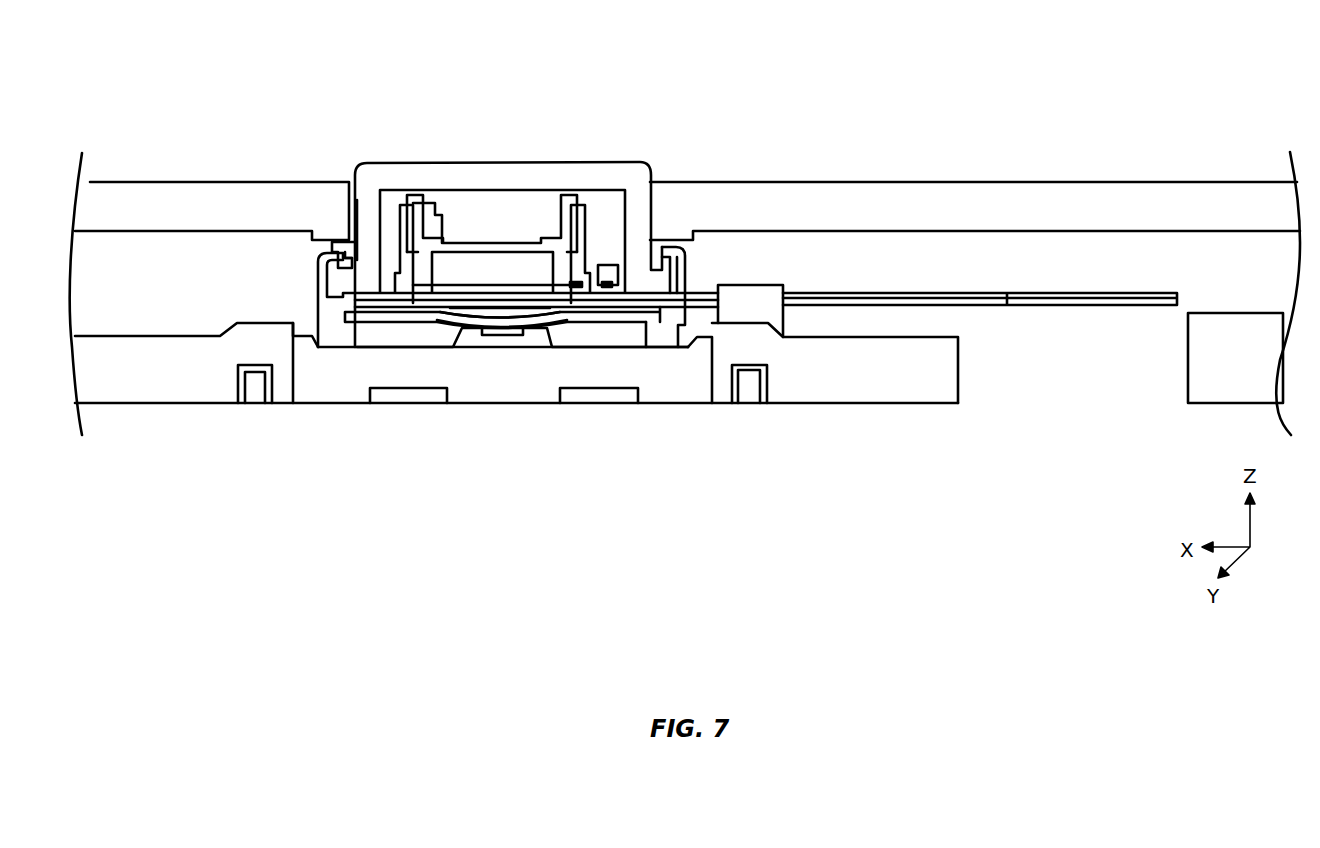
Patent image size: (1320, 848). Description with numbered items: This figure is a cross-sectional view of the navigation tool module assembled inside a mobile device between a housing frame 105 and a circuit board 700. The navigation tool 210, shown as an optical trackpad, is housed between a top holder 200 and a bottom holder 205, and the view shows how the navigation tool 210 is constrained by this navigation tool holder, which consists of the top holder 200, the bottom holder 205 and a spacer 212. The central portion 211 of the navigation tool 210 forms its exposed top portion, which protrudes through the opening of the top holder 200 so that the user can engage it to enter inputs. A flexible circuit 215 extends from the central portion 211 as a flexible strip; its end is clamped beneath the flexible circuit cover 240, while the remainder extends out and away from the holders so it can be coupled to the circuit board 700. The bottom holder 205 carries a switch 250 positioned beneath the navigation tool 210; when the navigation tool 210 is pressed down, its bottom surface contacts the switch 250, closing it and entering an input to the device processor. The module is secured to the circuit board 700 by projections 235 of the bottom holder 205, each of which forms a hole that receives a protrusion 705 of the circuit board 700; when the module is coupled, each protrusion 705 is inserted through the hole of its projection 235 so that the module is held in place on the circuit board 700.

The housing frame 105 is at (140, 195).
The top holder 200 is at (320, 255).
The bottom holder 205 is at (502, 403).
The navigation tool 210 is at (523, 163).
The central portion 211 is at (368, 178).
The spacer 212 is at (348, 255).
The flexible circuit 215 is at (968, 302).
The projection 235 is at (258, 390).
The flexible circuit cover 240 is at (748, 300).
The switch 250 is at (502, 332).
The circuit board 700 is at (132, 403).
The protrusion 705 is at (287, 393).